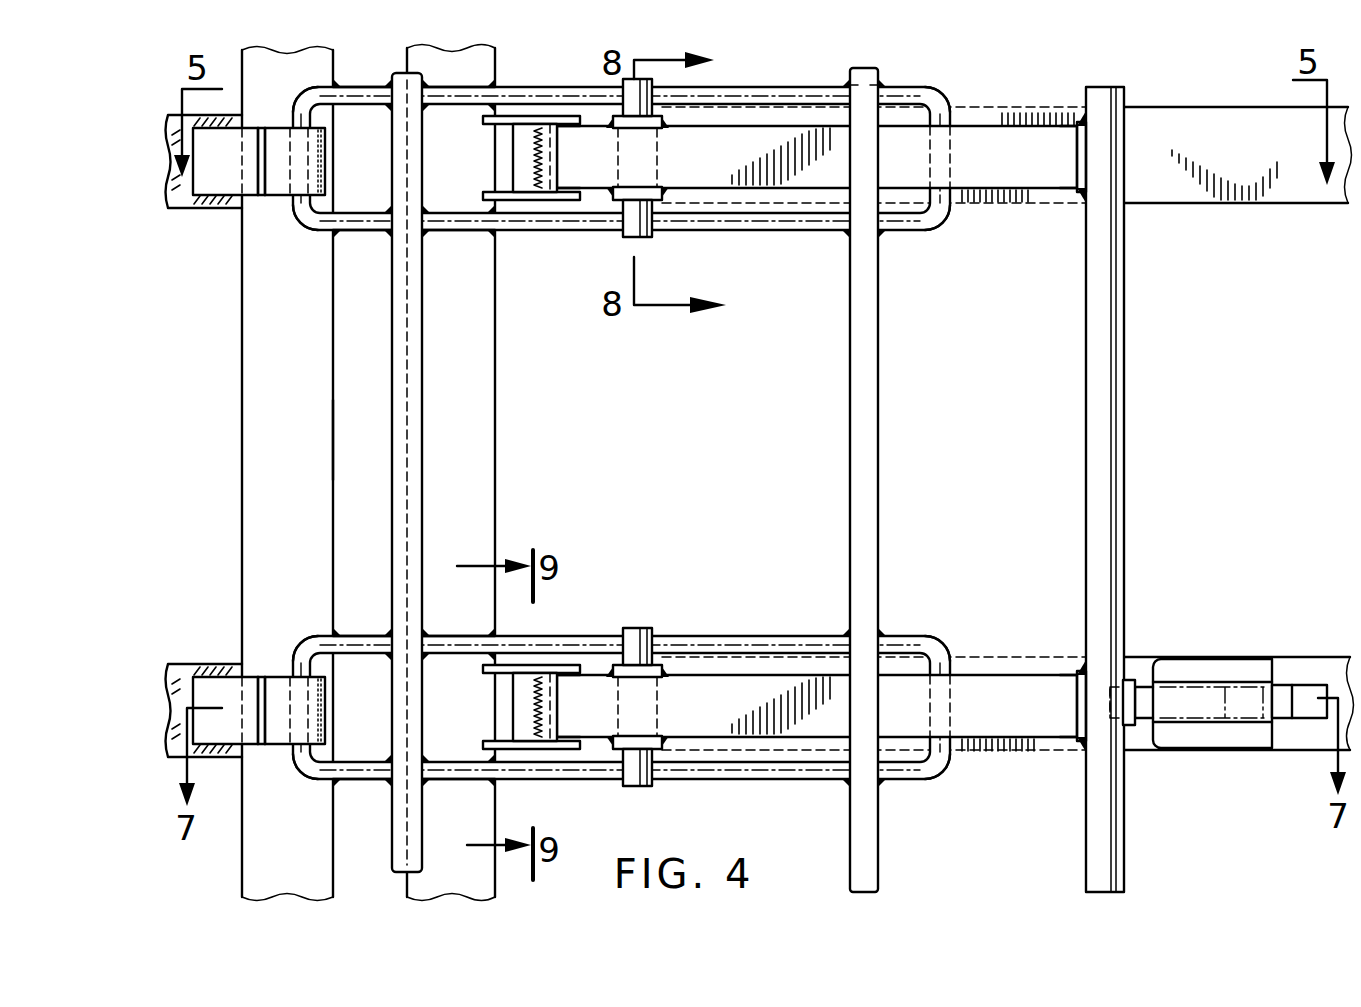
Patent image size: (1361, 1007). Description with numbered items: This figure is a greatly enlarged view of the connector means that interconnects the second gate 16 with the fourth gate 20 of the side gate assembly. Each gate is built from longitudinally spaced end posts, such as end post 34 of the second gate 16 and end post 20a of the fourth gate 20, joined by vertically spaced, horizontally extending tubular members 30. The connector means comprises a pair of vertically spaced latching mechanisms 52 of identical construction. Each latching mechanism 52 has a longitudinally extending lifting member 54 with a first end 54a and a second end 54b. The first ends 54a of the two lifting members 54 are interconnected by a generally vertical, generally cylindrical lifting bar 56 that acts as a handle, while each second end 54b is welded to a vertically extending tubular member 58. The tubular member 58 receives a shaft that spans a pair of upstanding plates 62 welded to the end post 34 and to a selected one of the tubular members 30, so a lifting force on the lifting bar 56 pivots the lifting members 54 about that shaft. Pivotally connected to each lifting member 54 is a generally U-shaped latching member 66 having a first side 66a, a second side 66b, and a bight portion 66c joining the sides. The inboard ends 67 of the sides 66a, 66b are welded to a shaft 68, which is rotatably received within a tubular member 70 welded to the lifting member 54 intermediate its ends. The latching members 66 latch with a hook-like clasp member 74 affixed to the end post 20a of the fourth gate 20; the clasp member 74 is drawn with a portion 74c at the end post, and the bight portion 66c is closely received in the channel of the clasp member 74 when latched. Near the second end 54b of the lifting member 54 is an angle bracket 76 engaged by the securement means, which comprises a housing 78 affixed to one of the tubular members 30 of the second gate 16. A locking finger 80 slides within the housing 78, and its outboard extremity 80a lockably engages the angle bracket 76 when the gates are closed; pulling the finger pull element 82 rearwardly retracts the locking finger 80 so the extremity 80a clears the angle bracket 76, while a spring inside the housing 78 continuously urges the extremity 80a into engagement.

The second side gate 16 is at (1162, 100).
The fourth side gate 20 is at (222, 334).
The end post of fourth gate 20a is at (292, 440).
The tubular member 30 is at (1178, 188).
The end post of second gate 34 is at (477, 389).
The latching mechanism 52 is at (716, 246).
The lifting member 54 is at (978, 120).
The first end of lifting member 54a is at (1050, 162).
The second end of lifting member 54b is at (502, 147).
The lifting bar 56 is at (1115, 393).
The tubular member 58 is at (513, 170).
The upstanding plates 62 is at (527, 117).
The latching member 66 is at (370, 236).
The first side of latching member 66a is at (455, 93).
The second side of latching member 66b is at (462, 222).
The bight portion 66c is at (304, 198).
The inboard ends of side members 67 is at (608, 97).
The shaft 68 is at (637, 226).
The tubular member 70 is at (634, 196).
The clasp member 74 is at (226, 200).
The clamp member flange 74c is at (305, 147).
The angle bracket 76 is at (1133, 724).
The housing 78 is at (1210, 676).
The locking finger 80 is at (1143, 700).
The outboard extremity of locking finger 80a is at (1120, 680).
The finger pull element 82 is at (1305, 690).